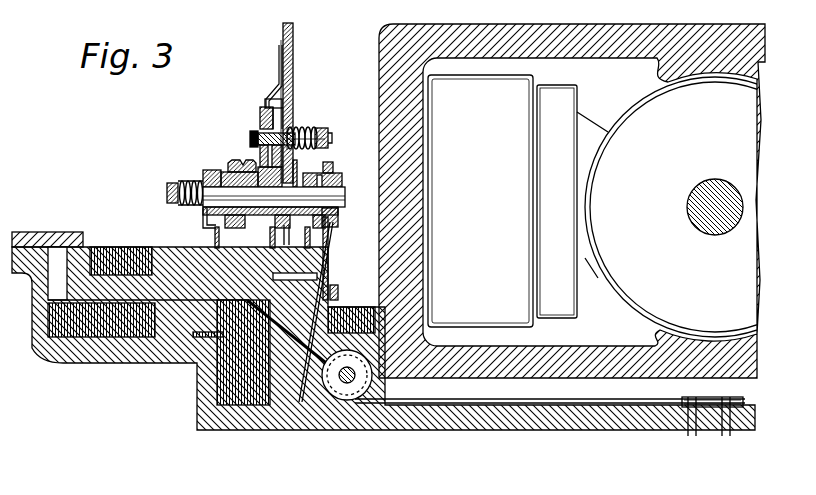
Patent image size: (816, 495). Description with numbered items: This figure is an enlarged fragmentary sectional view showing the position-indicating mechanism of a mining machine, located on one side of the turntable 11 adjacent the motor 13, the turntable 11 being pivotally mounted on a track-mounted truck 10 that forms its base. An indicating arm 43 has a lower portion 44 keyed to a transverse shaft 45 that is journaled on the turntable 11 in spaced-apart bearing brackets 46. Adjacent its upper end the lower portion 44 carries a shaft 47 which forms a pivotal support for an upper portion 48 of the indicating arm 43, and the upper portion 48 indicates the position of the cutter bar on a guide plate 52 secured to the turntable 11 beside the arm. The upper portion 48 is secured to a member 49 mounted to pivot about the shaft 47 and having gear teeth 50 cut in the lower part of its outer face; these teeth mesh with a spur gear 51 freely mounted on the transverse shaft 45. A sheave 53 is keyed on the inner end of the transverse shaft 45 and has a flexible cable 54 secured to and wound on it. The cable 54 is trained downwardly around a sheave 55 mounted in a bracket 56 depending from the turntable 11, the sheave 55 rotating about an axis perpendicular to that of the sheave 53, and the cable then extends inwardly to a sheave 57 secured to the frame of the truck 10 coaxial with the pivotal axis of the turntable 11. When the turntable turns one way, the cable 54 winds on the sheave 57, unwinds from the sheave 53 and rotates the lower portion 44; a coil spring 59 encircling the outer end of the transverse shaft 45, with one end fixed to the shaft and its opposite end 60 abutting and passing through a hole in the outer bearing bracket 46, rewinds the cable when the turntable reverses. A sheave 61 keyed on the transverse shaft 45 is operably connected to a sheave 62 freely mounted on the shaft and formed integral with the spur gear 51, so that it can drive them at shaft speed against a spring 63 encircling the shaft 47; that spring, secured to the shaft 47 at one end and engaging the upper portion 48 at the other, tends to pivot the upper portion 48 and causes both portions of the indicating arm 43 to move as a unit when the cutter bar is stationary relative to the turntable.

The track-mounted truck 10 is at (150, 369).
The turntable 11 is at (94, 245).
The motor 13 is at (650, 25).
The indicating arm 43 is at (275, 47).
The lower portion 44 is at (283, 165).
The transverse shaft 45 is at (167, 196).
The bearing brackets 46 is at (206, 174).
The shaft 47 is at (328, 137).
The upper portion 48 is at (276, 64).
The member 49 is at (258, 114).
The gear teeth 50 is at (259, 164).
The spur gear 51 is at (269, 231).
The guide plate 52 is at (294, 63).
The sheave 53 is at (337, 175).
The flexible cable 54 is at (460, 401).
The sheave 55 is at (354, 400).
The bracket 56 is at (298, 405).
The sheave 57 is at (705, 400).
The coil spring 59 is at (190, 186).
The opposite end 60 is at (200, 229).
The sheave 61 is at (232, 168).
The sheave 62 is at (240, 160).
The spring 63 is at (295, 128).